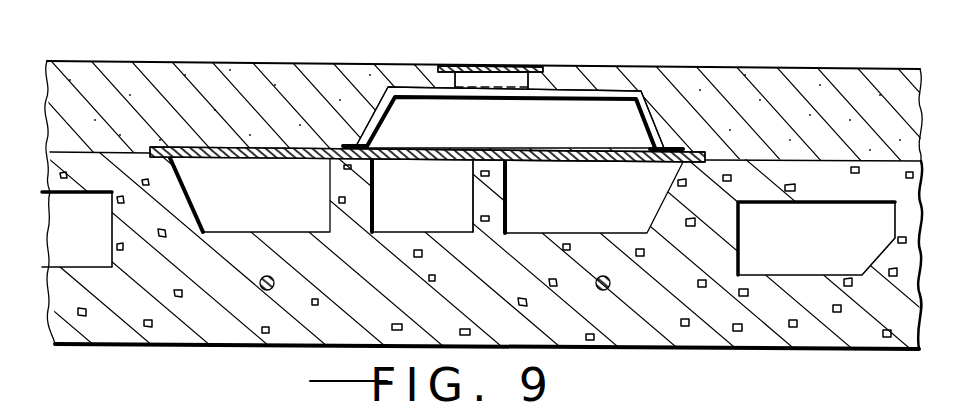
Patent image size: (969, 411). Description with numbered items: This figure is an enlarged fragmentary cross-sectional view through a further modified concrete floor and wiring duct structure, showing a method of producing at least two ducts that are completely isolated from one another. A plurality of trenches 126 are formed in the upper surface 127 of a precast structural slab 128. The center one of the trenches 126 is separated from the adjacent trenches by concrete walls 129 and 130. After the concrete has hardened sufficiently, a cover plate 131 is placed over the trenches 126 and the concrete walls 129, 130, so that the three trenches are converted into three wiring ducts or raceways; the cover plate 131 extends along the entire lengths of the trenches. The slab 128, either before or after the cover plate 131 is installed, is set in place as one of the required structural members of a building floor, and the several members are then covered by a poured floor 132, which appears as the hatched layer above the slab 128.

The trenches 126 is at (426, 195).
The upper surface 127 is at (120, 152).
The precast structural slab 128 is at (720, 351).
The concrete wall 129 is at (328, 194).
The concrete wall 130 is at (504, 186).
The cover plate 131 is at (487, 150).
The poured floor 132 is at (753, 68).